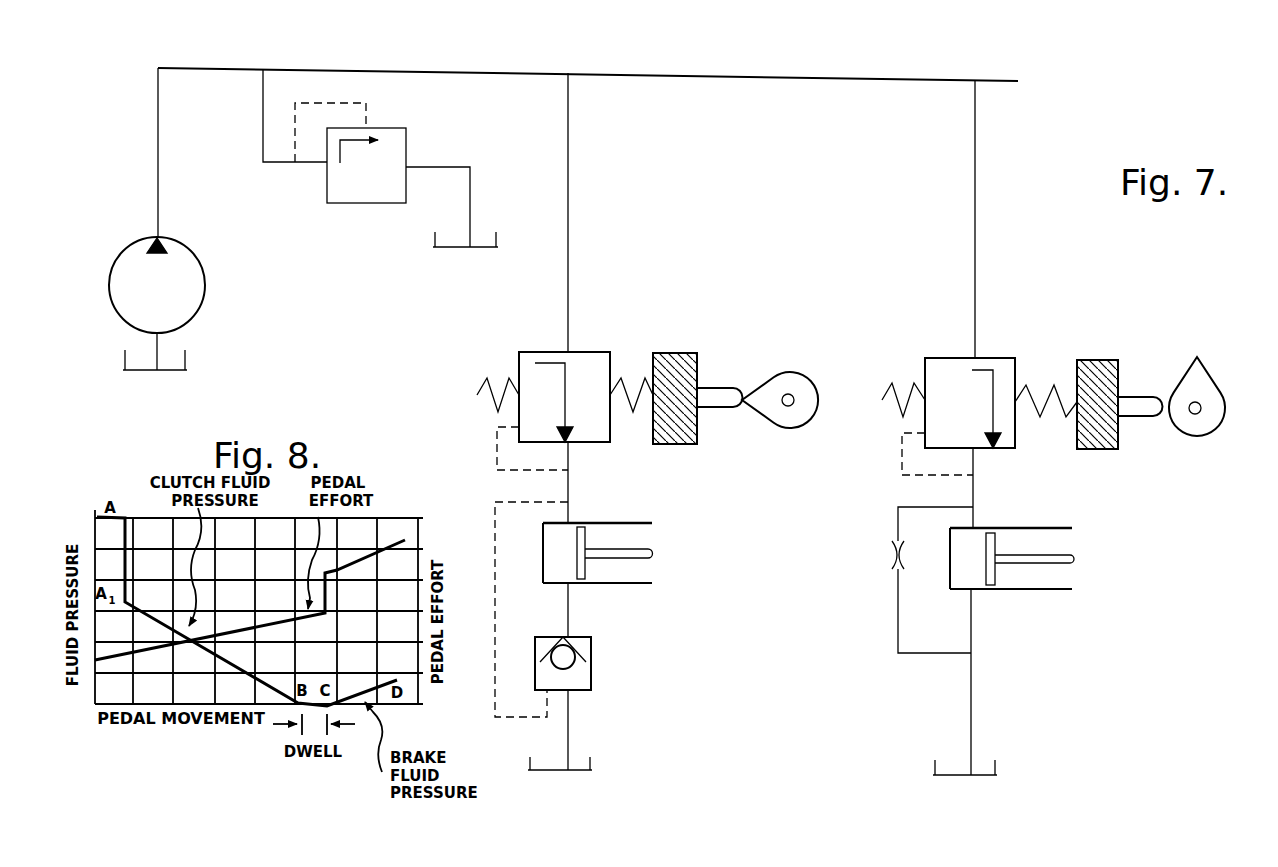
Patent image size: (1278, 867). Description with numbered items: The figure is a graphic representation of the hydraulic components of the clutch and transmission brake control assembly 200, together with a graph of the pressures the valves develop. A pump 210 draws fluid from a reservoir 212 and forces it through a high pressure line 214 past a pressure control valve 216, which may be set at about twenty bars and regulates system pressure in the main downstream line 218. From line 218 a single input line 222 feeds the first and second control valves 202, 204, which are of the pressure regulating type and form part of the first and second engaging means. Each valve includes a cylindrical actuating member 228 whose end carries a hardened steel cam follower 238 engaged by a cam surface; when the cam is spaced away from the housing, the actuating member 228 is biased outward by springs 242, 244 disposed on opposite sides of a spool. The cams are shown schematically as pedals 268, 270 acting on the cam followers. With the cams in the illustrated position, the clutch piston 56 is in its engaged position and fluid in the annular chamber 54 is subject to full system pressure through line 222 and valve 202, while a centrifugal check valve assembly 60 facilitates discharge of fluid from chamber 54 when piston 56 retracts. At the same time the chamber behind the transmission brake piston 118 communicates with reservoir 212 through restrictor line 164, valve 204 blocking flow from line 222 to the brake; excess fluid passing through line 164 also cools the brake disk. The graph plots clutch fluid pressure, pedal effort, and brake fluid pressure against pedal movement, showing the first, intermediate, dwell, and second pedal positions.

The control assembly 200 is at (1110, 652).
The first control valve 202 is at (626, 330).
The second control valve 204 is at (1059, 331).
The pump 210 is at (206, 290).
The reservoir 212 is at (175, 372).
The high pressure line 214 is at (157, 158).
The pressure control valve 216 is at (357, 203).
The main downstream line 218 is at (597, 72).
The input line 222 is at (569, 177).
The cylindrical actuating member 228 is at (675, 444).
The cam follower 238 is at (718, 393).
The spring 242 is at (628, 415).
The spring 244 is at (495, 382).
The clutch pedal 268 is at (750, 392).
The brake pedal 270 is at (1207, 370).
The annular chamber 54 is at (556, 551).
The annular piston 56 is at (586, 567).
The centrifugal check valve assembly 60 is at (591, 670).
The restrictor line 164 is at (898, 612).
The annular piston 118 is at (996, 577).